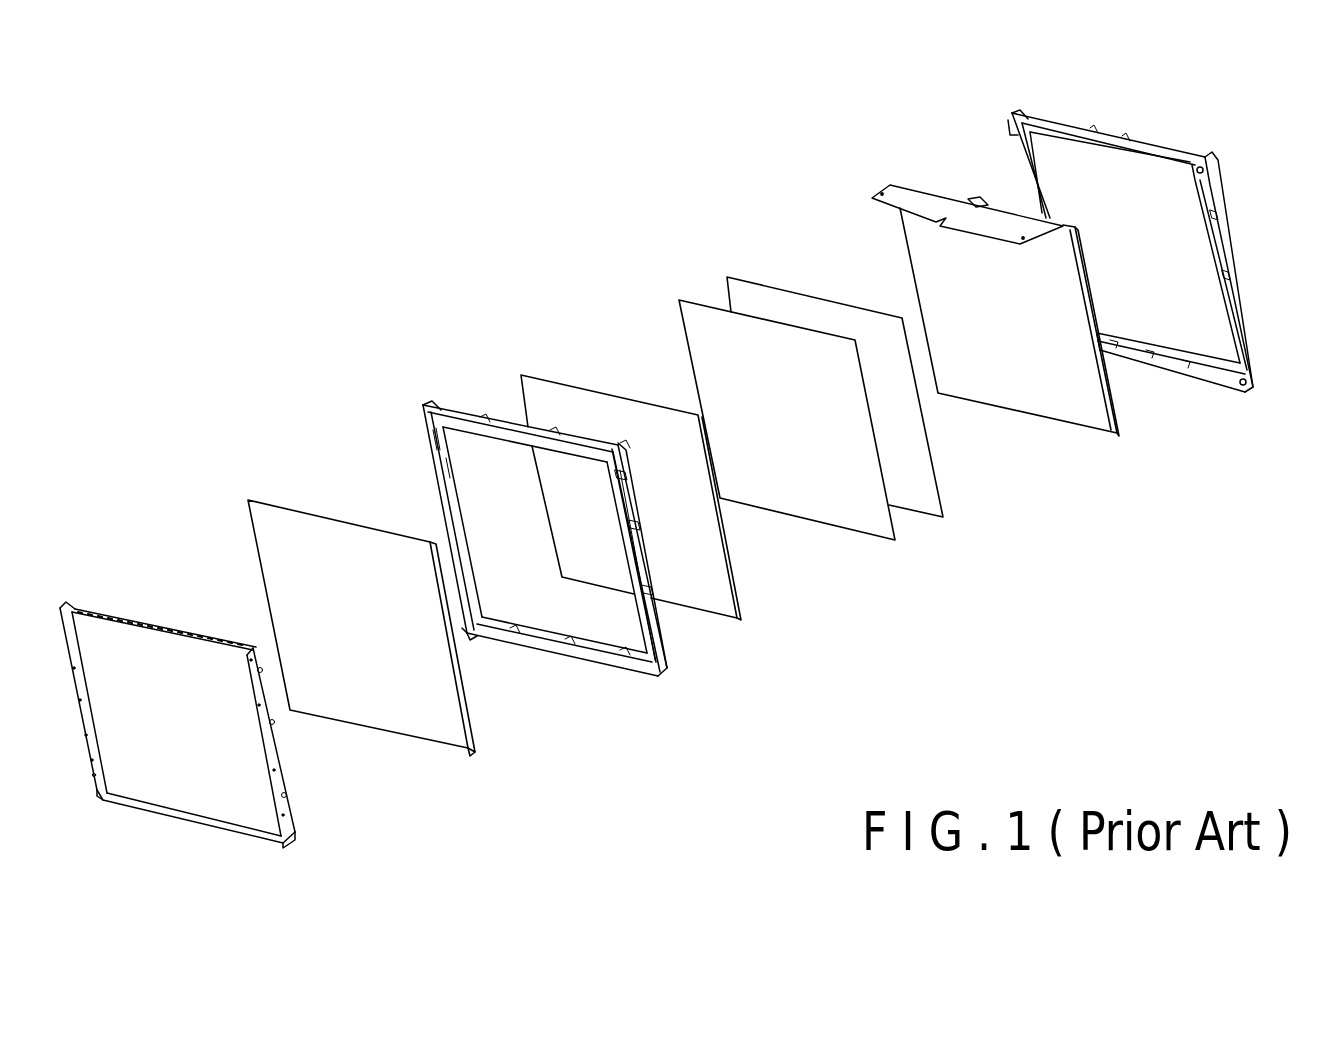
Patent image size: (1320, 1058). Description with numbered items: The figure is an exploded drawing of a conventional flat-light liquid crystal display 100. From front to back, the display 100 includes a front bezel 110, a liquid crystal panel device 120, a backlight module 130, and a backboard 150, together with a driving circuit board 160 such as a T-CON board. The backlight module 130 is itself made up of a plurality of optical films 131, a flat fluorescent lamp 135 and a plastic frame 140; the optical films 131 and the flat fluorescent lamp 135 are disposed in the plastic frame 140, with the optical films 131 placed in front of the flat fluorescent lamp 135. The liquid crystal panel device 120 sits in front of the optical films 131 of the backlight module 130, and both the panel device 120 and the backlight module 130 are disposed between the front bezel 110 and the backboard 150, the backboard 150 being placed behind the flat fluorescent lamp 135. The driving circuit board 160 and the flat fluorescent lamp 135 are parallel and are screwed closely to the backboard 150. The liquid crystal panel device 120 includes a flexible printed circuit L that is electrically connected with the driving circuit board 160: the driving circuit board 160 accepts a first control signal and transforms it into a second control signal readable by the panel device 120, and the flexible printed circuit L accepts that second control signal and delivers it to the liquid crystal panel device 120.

The liquid crystal display 100 is at (227, 130).
The front bezel 110 is at (1210, 350).
The liquid crystal panel device 120 is at (1075, 410).
The backlight module 130 is at (717, 257).
The optical films 131 is at (725, 630).
The flat fluorescent lamp 135 is at (441, 735).
The plastic frame 140 is at (627, 640).
The backboard 150 is at (77, 612).
The driving circuit board 160 is at (912, 197).
The flexible printed circuit L is at (982, 202).